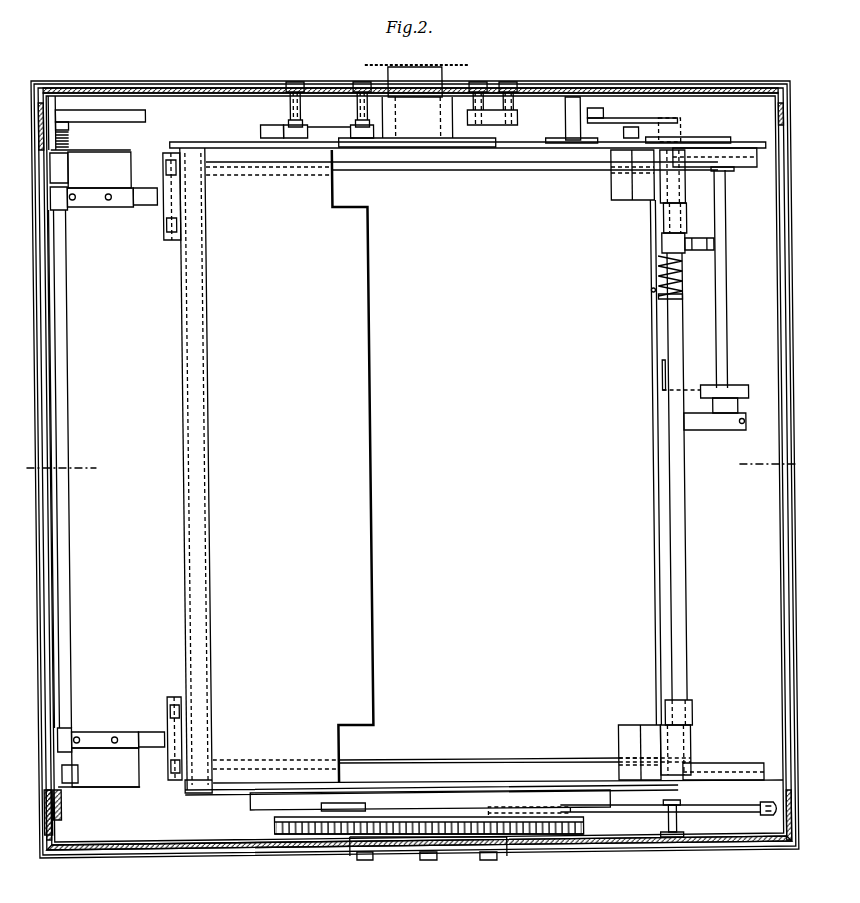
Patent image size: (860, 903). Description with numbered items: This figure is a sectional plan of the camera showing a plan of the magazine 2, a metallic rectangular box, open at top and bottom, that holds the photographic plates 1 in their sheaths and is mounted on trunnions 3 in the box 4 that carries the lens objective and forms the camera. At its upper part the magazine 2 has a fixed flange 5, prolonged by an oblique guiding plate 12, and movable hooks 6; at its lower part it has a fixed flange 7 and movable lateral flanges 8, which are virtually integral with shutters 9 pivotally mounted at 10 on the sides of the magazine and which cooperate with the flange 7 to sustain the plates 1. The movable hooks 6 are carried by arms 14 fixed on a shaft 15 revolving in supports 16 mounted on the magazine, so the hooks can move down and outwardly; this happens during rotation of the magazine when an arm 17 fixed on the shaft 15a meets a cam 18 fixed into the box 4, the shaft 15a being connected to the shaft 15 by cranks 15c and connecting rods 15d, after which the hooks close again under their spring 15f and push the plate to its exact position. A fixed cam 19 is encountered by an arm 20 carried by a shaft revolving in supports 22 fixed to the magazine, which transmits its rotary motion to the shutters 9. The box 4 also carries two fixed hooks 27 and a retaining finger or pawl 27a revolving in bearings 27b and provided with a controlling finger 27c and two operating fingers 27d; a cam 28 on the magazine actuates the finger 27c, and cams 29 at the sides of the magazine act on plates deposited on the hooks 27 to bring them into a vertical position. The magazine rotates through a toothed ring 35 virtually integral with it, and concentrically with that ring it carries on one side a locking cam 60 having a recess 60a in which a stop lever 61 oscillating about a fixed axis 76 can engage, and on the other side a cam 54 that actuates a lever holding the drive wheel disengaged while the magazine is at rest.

The photographic plate 1 is at (411, 452).
The magazine 2 is at (178, 437).
The trunnions 3 is at (449, 868).
The box 4 is at (730, 88).
The fixed flange 5 is at (193, 390).
The movable hooks 6 is at (609, 188).
The fixed flange 7 is at (200, 505).
The movable lateral flanges 8 is at (475, 163).
The shutters 9 is at (221, 146).
The pivot 10 is at (171, 152).
The oblique guiding plate 12 is at (365, 452).
The arms 14 is at (685, 191).
The shaft 15 is at (677, 568).
The shaft 15a is at (682, 126).
The crank 15c is at (683, 259).
The connecting rods 15d is at (713, 243).
The spring 15f is at (680, 290).
The supports 16 is at (686, 226).
The arm 17 is at (617, 118).
The cam 18 is at (519, 121).
The fixed cam 19 is at (266, 126).
The arm 20 is at (703, 137).
The supports 22 is at (728, 171).
The fixed hooks 27 is at (723, 342).
The retaining finger 27a is at (64, 337).
The bearings 27b is at (68, 166).
The controlling finger 27c is at (121, 114).
The operating fingers 27d is at (63, 205).
The cam 28 is at (565, 105).
The cams 29 is at (748, 153).
The toothed ring 35 is at (298, 835).
The cam 54 is at (424, 795).
The locking cam 60 is at (340, 816).
The recess 60a is at (489, 808).
The stop lever 61 is at (619, 812).
The fixed axis 76 is at (672, 828).